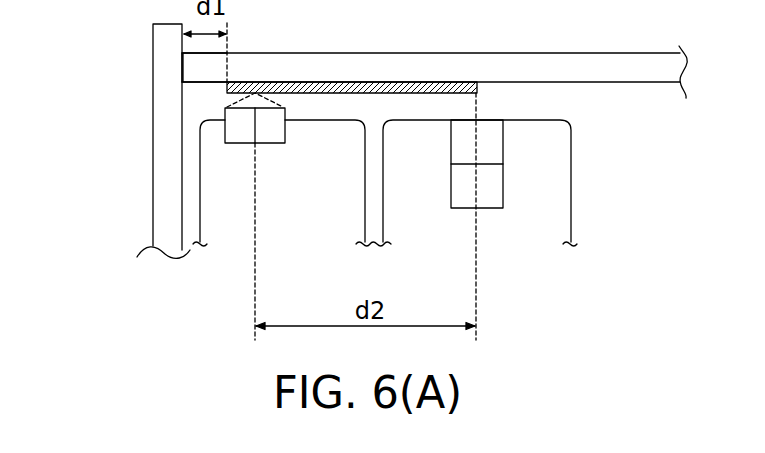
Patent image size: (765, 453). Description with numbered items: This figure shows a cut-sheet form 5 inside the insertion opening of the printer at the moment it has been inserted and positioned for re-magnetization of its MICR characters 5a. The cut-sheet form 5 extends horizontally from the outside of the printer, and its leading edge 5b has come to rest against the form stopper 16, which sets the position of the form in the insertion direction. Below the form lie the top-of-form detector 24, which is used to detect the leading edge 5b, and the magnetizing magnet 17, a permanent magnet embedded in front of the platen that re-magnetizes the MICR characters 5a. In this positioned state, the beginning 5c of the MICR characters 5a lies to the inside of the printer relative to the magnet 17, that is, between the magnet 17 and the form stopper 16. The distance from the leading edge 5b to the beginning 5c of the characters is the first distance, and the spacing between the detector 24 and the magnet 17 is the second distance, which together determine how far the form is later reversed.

The cut-sheet form 5 is at (453, 67).
The MICR characters 5a is at (383, 82).
The leading edge 5b is at (182, 70).
The beginning of the MICR characters 5c is at (233, 82).
The form stopper 16 is at (165, 158).
The magnet 17 is at (492, 203).
The top-of-form (TOF) detector 24 is at (273, 138).